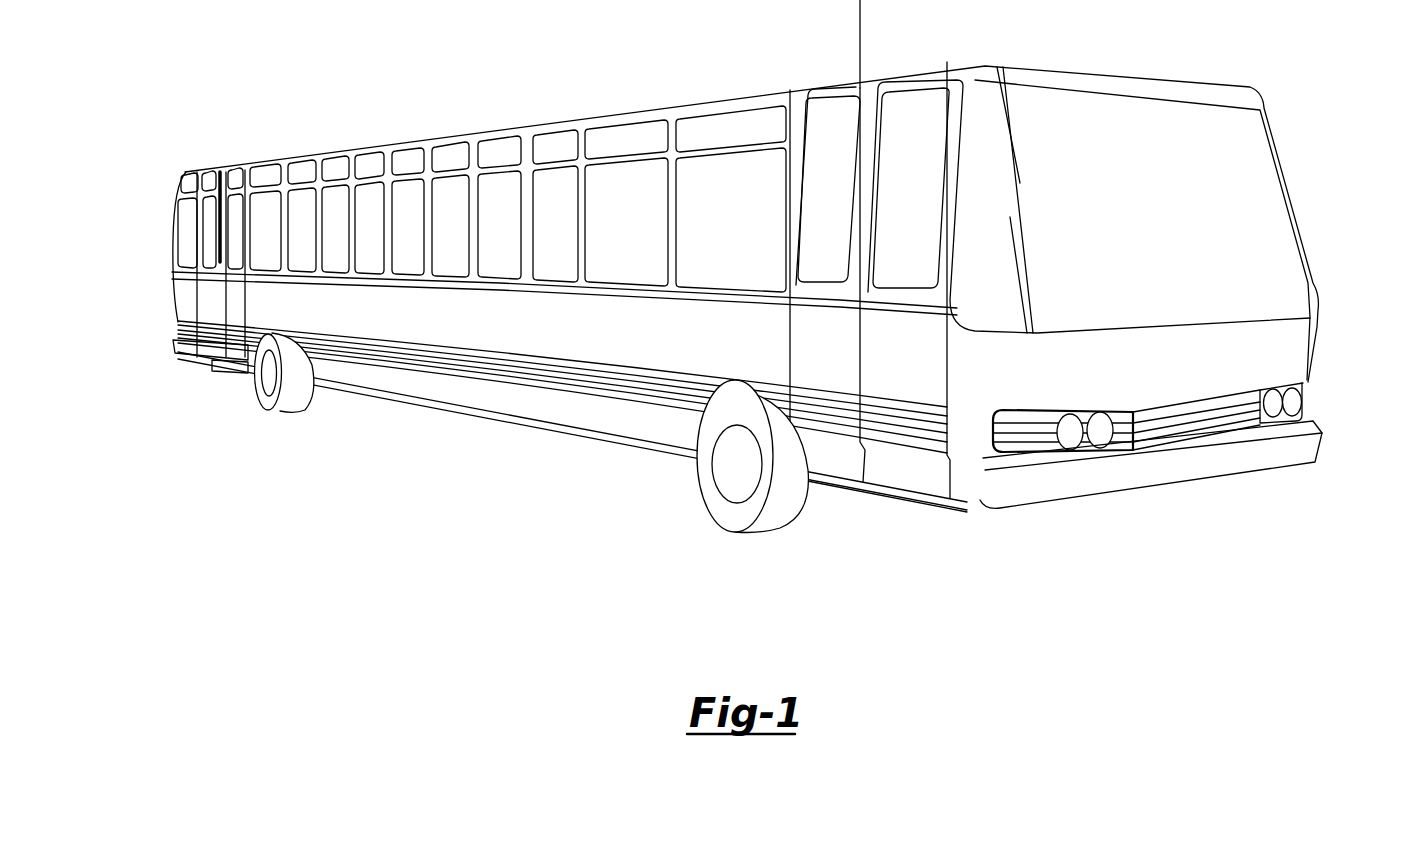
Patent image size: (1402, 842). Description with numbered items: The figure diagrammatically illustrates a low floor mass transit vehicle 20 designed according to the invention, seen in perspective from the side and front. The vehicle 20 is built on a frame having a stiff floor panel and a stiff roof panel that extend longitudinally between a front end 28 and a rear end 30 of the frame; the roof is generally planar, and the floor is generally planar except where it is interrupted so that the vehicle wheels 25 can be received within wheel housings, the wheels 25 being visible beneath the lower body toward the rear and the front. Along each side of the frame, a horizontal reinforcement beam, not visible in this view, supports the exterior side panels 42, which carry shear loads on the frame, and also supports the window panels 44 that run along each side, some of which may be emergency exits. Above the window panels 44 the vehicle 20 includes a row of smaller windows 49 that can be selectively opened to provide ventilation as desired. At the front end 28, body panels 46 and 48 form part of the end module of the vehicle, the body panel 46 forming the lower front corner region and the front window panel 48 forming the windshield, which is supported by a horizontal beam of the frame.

The mass transit vehicle 20 is at (366, 440).
The vehicle wheels 25 is at (257, 410).
The front end 28 is at (1237, 498).
The rear end 30 is at (177, 171).
The exterior side panels 42 is at (517, 327).
The window panels 44 is at (502, 197).
The body panel 46 is at (1082, 362).
The front window panel 48 is at (1260, 198).
The windows 49 is at (275, 177).